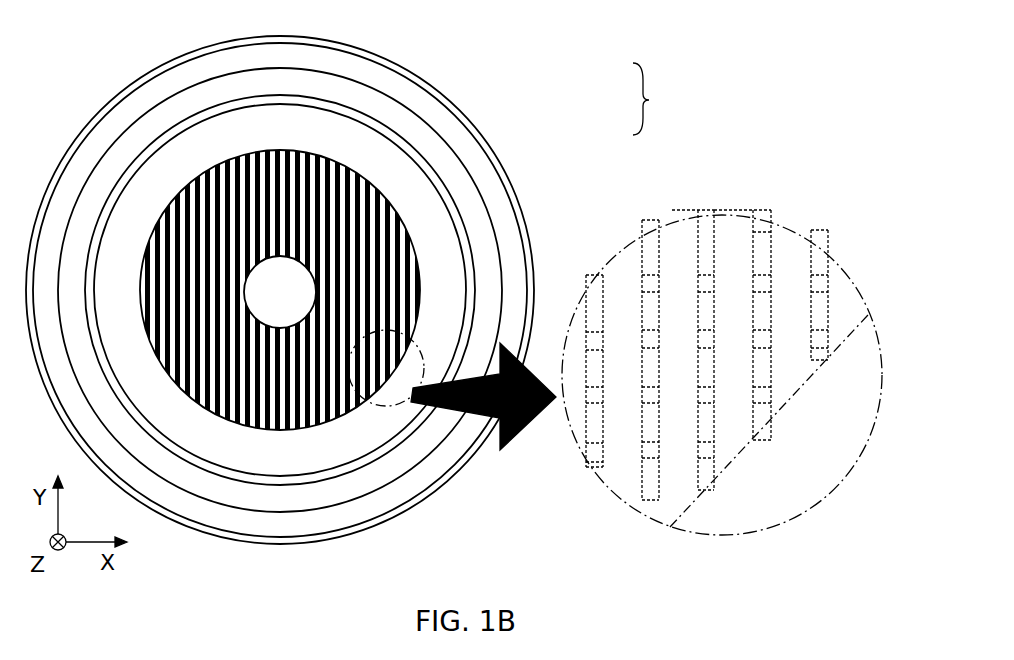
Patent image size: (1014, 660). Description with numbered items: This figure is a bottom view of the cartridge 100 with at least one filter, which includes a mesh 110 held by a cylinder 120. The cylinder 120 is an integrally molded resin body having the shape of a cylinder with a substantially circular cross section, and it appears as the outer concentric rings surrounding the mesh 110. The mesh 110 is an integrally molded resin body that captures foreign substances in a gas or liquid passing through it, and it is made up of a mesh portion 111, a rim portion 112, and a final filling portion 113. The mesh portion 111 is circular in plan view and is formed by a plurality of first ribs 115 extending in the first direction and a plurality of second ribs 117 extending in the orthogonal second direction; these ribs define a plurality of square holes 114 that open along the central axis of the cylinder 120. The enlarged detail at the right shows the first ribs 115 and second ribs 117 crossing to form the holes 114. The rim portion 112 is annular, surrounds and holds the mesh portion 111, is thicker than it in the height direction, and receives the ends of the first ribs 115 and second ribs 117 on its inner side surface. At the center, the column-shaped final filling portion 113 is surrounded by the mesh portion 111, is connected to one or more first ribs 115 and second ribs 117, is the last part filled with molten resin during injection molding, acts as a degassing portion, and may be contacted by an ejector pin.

The cartridge with at least one filter 100 is at (666, 99).
The mesh 110 is at (452, 200).
The mesh portion 111 is at (358, 422).
The rim portion 112 is at (170, 177).
The final filling portion 113 is at (278, 268).
The holes 114 is at (707, 390).
The first ribs 115 is at (140, 268).
The second ribs 117 is at (370, 307).
The cylinder 120 is at (466, 108).